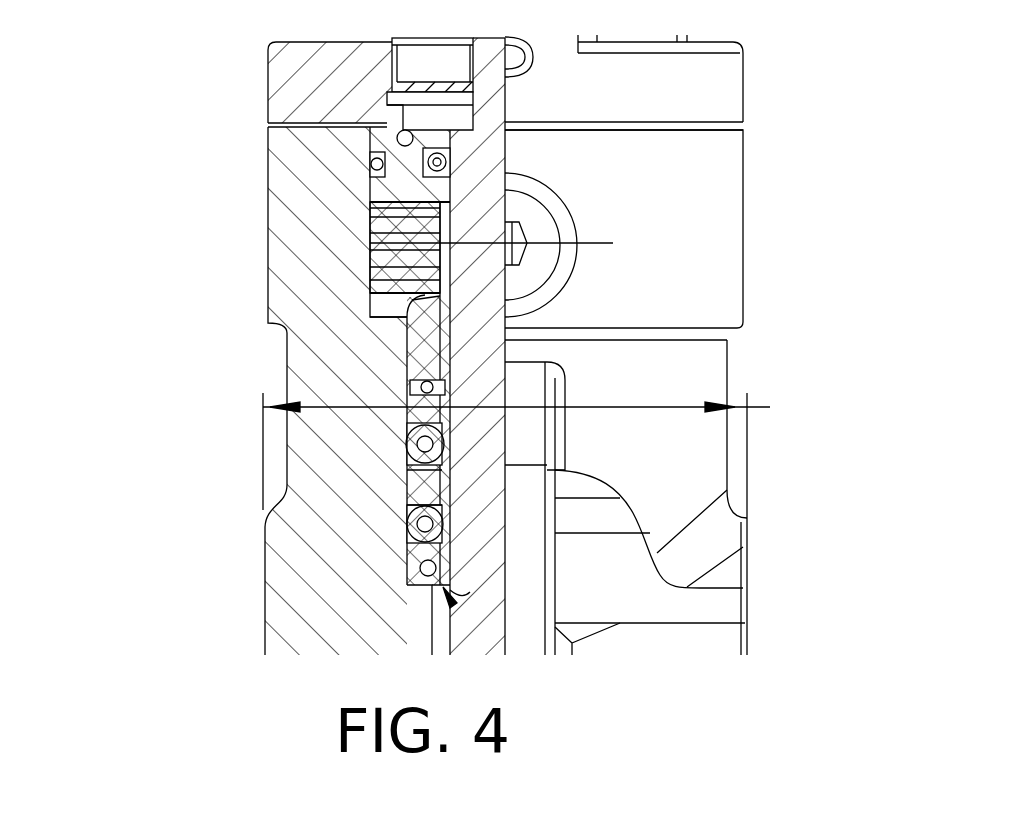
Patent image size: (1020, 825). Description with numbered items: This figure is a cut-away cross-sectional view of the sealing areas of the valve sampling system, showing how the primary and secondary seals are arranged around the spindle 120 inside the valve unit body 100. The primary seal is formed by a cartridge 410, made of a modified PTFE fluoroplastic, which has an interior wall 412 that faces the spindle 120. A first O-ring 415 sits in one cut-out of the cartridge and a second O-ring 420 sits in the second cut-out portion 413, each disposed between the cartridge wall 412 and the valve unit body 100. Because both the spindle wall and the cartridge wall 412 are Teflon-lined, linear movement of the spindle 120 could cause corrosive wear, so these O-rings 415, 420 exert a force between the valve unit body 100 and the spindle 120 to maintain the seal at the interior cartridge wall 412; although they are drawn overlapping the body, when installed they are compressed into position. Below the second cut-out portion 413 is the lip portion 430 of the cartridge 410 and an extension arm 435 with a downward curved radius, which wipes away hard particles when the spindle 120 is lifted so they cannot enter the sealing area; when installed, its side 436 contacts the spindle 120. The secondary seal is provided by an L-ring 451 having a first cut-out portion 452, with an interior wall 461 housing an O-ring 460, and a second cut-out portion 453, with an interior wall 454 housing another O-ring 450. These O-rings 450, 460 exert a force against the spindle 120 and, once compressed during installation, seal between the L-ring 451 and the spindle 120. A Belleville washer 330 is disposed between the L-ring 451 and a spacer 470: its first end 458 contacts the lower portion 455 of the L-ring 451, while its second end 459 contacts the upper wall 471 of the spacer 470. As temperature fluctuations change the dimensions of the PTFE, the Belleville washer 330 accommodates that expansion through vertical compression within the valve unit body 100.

The valve unit body 100 is at (350, 170).
The spindle 120 is at (478, 497).
The Belleville washer 330 is at (370, 243).
The cartridge 410 is at (405, 367).
The interior wall 412 is at (432, 432).
The second cut-out portion 413 is at (400, 487).
The first O-ring 415 is at (400, 383).
The second O-ring 420 is at (403, 525).
The lip portion 430 is at (407, 570).
The extension arm 435 is at (453, 600).
The side 436 is at (465, 598).
The O-ring 450 is at (368, 145).
The L-ring 451 is at (397, 136).
The first cut-out portion 452 is at (447, 150).
The second cut-out portion 453 is at (378, 158).
The interior wall 454 is at (365, 197).
The lower portion 455 is at (455, 197).
The first end 458 is at (370, 218).
The second end 459 is at (370, 280).
The O-ring 460 is at (503, 146).
The interior wall 461 is at (452, 185).
The spacer 470 is at (407, 317).
The upper wall 471 is at (410, 300).